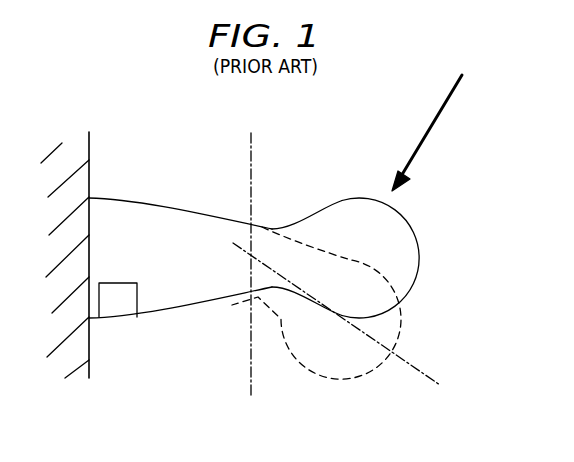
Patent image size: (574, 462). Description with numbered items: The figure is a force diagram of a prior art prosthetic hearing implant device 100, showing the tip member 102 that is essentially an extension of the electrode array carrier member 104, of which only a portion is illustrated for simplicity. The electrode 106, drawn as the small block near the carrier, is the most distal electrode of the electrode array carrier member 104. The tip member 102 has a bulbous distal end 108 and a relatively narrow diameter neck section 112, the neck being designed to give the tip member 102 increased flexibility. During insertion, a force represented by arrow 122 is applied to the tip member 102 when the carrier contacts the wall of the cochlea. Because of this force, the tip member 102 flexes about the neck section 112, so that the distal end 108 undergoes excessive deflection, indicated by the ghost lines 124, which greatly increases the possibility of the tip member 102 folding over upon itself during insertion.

The prosthetic hearing implant device 100 is at (314, 214).
The tip member 102 is at (307, 206).
The electrode array carrier member 104 is at (147, 205).
The electrode 106 is at (121, 305).
The bulbous distal end 108 is at (438, 256).
The neck section 112 is at (262, 290).
The arrow representing force 122 is at (445, 107).
The ghost lines 124 is at (353, 376).